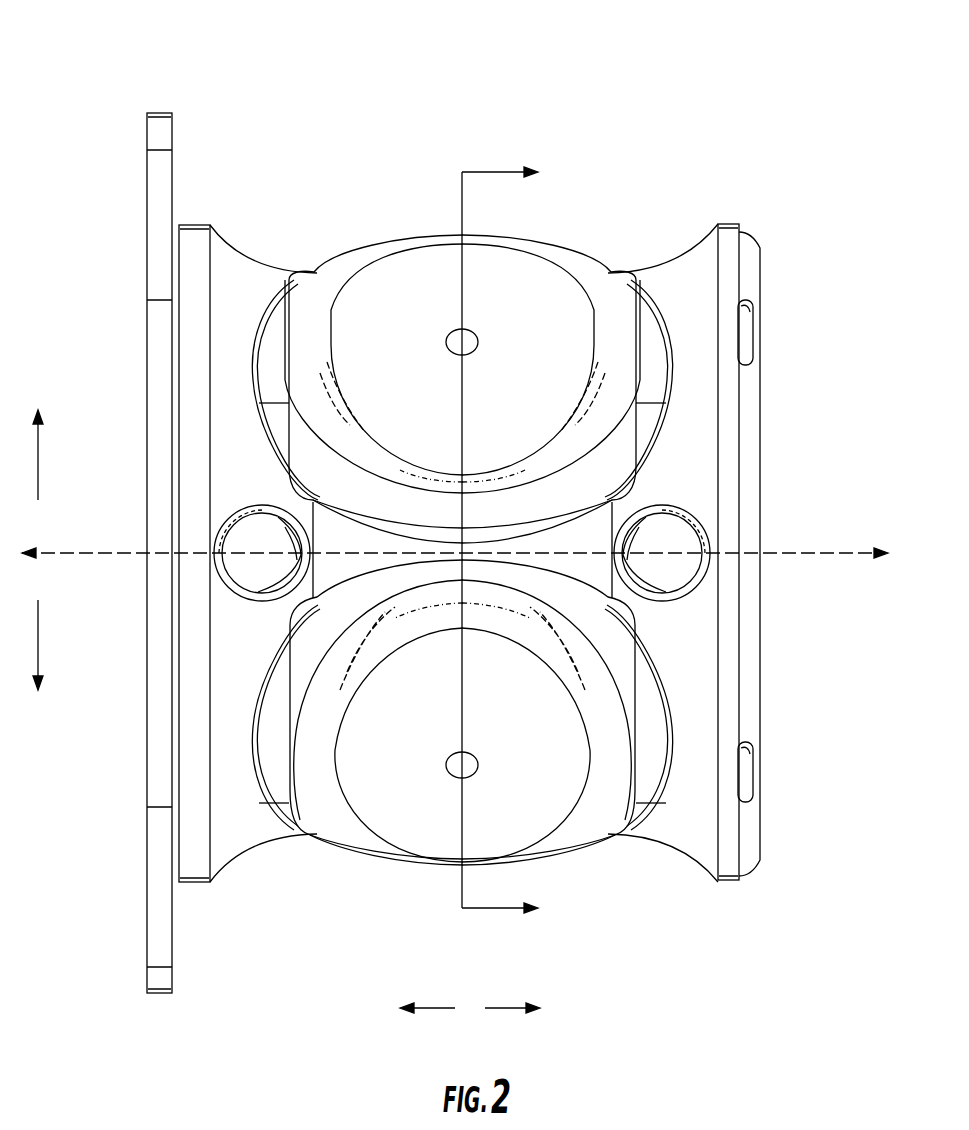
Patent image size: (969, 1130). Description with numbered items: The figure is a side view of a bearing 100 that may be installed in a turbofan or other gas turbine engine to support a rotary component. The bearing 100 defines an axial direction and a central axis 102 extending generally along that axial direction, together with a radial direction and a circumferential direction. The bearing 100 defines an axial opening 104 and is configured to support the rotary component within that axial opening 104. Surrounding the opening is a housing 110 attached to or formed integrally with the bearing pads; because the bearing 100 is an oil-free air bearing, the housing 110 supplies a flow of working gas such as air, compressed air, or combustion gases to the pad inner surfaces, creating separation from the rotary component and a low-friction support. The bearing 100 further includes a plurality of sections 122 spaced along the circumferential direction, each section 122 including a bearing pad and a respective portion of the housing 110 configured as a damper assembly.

The bearing 100 is at (474, 515).
The central axis 102 is at (853, 553).
The axial opening 104 is at (768, 520).
The housing 110 is at (365, 230).
The sections 122 is at (705, 383).